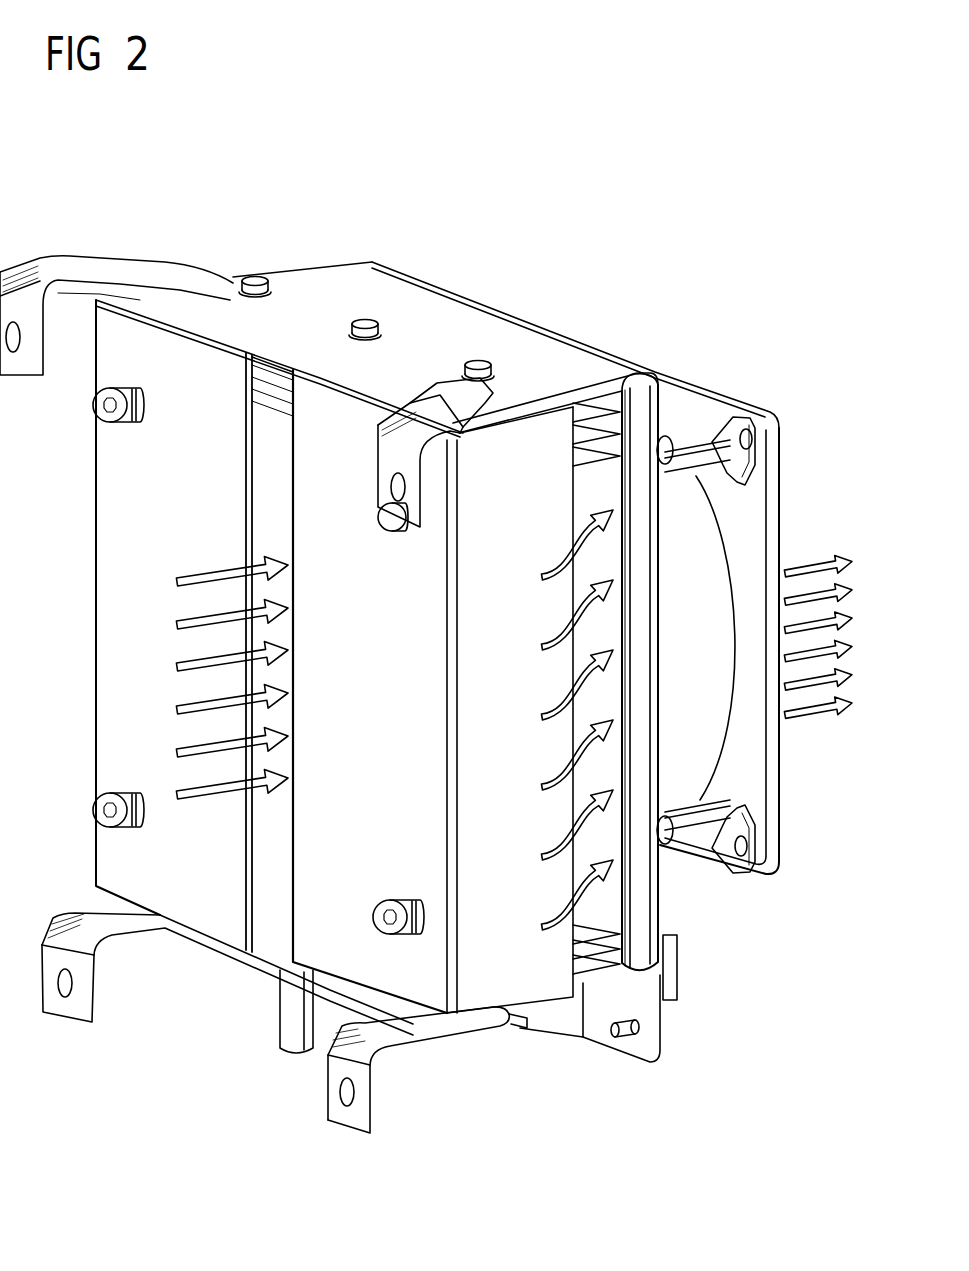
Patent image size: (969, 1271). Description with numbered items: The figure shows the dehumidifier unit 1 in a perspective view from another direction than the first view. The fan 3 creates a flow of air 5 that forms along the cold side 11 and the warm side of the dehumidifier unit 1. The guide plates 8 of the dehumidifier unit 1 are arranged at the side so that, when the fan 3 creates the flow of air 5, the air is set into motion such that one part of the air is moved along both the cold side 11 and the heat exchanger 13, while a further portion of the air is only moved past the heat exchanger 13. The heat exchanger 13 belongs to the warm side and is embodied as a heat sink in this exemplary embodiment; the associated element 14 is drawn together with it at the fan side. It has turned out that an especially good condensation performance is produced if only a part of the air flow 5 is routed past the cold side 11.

The dehumidifier unit 1 is at (658, 287).
The fan 3 is at (743, 745).
The flow of air 5 is at (212, 571).
The guide plate 8 is at (110, 650).
The cold side 11 is at (270, 468).
The heat exchanger 13 is at (592, 968).
The air channels 14 is at (596, 688).